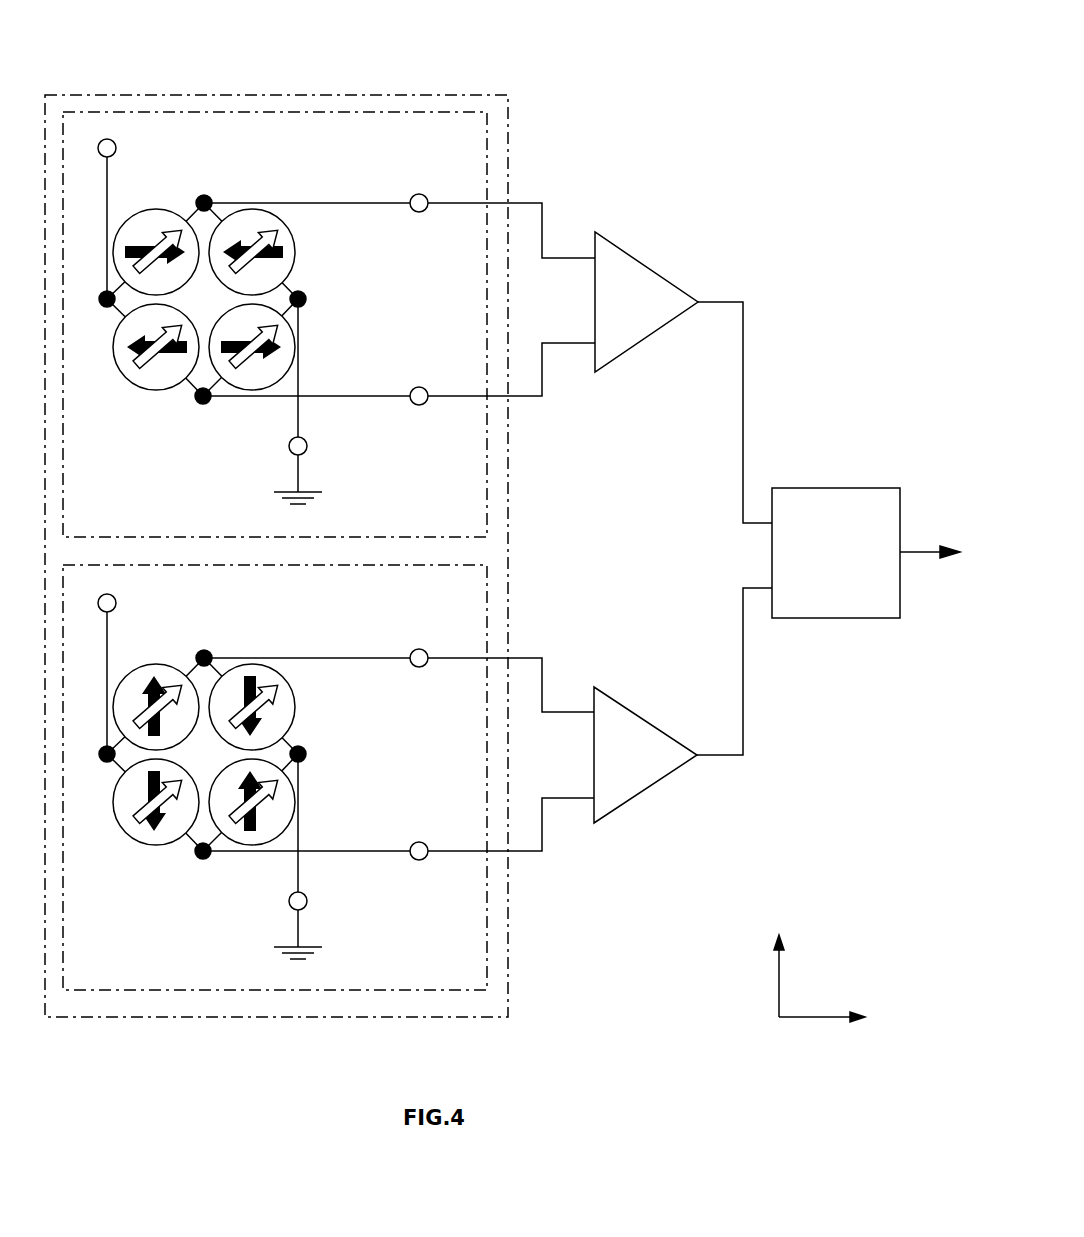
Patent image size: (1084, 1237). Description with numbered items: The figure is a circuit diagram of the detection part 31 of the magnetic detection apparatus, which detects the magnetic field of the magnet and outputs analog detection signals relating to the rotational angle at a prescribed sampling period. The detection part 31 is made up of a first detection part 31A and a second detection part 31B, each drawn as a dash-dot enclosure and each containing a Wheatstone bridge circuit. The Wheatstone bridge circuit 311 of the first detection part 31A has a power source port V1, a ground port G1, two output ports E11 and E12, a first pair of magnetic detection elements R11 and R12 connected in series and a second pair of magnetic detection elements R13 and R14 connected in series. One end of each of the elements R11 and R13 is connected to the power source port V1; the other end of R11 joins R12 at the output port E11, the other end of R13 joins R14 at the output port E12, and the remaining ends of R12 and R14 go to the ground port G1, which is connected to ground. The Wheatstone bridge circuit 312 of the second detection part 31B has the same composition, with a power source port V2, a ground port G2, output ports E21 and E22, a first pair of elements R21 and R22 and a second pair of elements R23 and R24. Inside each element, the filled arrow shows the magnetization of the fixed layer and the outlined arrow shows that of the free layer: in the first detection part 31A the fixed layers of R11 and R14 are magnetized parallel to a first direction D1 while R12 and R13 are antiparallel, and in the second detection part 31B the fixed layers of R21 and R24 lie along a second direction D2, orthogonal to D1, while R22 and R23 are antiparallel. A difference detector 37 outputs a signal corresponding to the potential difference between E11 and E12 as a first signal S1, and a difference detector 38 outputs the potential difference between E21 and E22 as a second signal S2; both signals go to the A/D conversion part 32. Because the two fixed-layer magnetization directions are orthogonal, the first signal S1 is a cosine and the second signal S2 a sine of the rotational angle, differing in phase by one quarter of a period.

The detection part 31 is at (500, 95).
The first detection part 31A is at (400, 112).
The second detection part 31B is at (485, 895).
The Wheatstone bridge circuit 311 is at (219, 277).
The Wheatstone bridge circuit 312 is at (219, 732).
The magnetic detection element R11 is at (156, 240).
The magnetic detection element R12 is at (271, 252).
The magnetic detection element R13 is at (146, 355).
The magnetic detection element R14 is at (277, 347).
The magnetic detection element R21 is at (156, 695).
The magnetic detection element R22 is at (271, 707).
The magnetic detection element R23 is at (146, 810).
The magnetic detection element R24 is at (277, 802).
The power source port V1 is at (121, 211).
The power source port V2 is at (121, 666).
The ground port G1 is at (308, 401).
The ground port G2 is at (308, 856).
The output port E11 is at (399, 213).
The output port E12 is at (399, 374).
The output port E21 is at (399, 668).
The output port E22 is at (398, 829).
The difference detector 37 is at (642, 260).
The difference detector 38 is at (657, 783).
The first signal S1 is at (741, 406).
The second signal S2 is at (740, 679).
The A/D conversion part 32 is at (864, 488).
The first direction D1 is at (838, 1020).
The second direction D2 is at (782, 965).